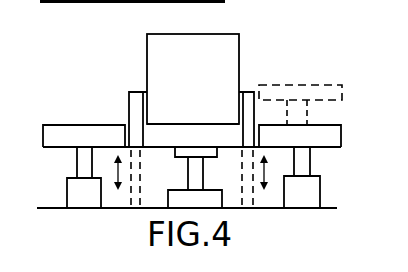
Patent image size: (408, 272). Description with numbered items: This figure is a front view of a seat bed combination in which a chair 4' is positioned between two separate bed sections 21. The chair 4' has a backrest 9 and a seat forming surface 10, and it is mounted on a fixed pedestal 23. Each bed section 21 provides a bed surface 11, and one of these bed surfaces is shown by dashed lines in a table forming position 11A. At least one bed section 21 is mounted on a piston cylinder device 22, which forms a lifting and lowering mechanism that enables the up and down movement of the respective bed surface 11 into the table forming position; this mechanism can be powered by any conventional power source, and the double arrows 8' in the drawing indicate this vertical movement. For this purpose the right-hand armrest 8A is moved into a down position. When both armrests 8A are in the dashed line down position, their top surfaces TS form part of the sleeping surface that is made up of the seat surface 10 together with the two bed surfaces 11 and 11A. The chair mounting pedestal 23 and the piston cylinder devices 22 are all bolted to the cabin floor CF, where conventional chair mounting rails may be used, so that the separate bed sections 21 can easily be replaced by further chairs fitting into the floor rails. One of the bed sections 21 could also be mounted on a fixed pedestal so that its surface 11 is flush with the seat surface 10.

The chair 4' is at (283, 30).
The movement path 8' is at (184, 198).
The armrest 8A is at (133, 98).
The backrest 9 is at (153, 45).
The seat surface 10 is at (173, 117).
The bed surface 11 is at (78, 124).
The table forming position 11A is at (301, 84).
The bed section 21 is at (67, 139).
The piston cylinder device 22 is at (88, 200).
The fixed pedestal 23 is at (197, 183).
The top surface TS is at (136, 91).
The cabin floor CF is at (331, 208).